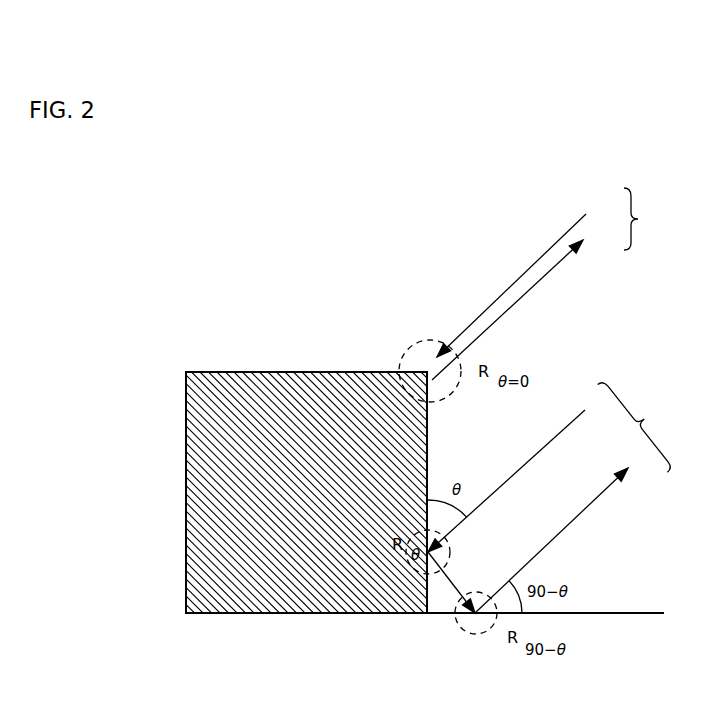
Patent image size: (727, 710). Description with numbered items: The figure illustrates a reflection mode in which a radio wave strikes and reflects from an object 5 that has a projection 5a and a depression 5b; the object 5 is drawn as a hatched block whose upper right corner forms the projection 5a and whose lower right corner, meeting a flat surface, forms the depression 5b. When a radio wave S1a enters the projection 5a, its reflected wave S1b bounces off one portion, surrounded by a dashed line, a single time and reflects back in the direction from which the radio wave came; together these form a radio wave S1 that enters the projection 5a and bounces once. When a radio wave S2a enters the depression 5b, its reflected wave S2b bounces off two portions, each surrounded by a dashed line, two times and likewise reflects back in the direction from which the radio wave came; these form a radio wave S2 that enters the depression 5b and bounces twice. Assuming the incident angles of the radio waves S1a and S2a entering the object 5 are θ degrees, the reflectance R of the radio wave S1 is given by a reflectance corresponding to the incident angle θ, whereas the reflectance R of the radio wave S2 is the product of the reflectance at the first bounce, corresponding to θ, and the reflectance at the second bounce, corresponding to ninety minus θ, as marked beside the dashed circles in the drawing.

The object 5 is at (234, 358).
The projection 5a is at (428, 371).
The depression 5b is at (445, 601).
The radio wave S1a is at (528, 276).
The reflected wave S1b is at (526, 305).
The radio wave S1 is at (651, 219).
The radio wave S2a is at (520, 472).
The reflected wave S2b is at (569, 535).
The radio wave S2 is at (642, 423).